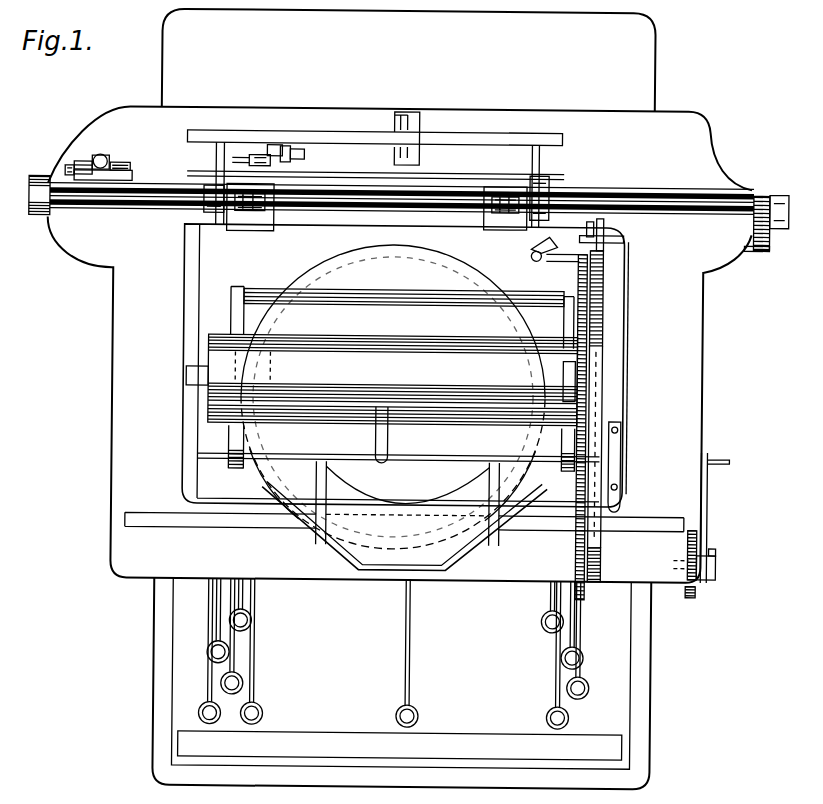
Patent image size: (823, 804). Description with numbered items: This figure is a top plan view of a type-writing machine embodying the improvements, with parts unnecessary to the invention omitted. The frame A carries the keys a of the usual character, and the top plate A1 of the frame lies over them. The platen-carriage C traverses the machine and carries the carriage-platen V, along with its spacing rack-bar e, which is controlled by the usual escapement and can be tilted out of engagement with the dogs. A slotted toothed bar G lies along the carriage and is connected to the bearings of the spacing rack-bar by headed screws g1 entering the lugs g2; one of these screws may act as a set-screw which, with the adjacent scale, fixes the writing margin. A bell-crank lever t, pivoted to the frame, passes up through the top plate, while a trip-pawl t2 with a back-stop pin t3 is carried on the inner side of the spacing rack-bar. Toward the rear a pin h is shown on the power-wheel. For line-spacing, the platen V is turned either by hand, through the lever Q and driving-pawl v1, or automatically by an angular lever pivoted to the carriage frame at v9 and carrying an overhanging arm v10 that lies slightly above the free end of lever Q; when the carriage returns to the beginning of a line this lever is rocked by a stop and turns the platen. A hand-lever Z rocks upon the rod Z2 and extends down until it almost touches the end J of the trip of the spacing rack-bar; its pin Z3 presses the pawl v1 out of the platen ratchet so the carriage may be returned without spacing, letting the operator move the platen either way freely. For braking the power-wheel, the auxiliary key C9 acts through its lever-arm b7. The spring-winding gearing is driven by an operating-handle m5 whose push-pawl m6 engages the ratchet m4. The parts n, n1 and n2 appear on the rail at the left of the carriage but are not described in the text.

The frame A is at (258, 70).
The top plate A1 is at (650, 184).
The platen-carriage C is at (408, 126).
The rack-bar e is at (463, 146).
The bell-crank lever t is at (251, 159).
The trip-pawl t2 is at (292, 156).
The back-stop pin t3 is at (272, 148).
The toothed bar G is at (458, 175).
The headed screws g1 is at (212, 186).
The lugs g2 is at (206, 213).
The detent n is at (63, 172).
The detent roller n1 is at (92, 166).
The detent block n2 is at (104, 162).
The pivot v9 is at (588, 220).
The end of trip J is at (580, 253).
The lever Q is at (599, 218).
The overhanging arm v10 is at (622, 238).
The hand-lever Z is at (760, 248).
The pin h is at (555, 246).
The carriage-platen V is at (392, 379).
The rod Z2 is at (568, 456).
The pin Z3 is at (572, 386).
The driving-pawl v1 is at (600, 383).
The operating-handle m5 is at (710, 520).
The push-pawl m6 is at (716, 540).
The ratchet m4 is at (698, 584).
The keys a is at (262, 617).
The lever-arm b7 is at (408, 636).
The auxiliary key C9 is at (399, 714).